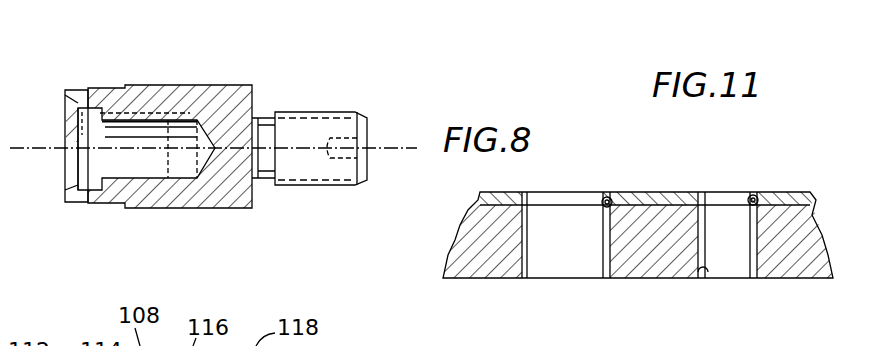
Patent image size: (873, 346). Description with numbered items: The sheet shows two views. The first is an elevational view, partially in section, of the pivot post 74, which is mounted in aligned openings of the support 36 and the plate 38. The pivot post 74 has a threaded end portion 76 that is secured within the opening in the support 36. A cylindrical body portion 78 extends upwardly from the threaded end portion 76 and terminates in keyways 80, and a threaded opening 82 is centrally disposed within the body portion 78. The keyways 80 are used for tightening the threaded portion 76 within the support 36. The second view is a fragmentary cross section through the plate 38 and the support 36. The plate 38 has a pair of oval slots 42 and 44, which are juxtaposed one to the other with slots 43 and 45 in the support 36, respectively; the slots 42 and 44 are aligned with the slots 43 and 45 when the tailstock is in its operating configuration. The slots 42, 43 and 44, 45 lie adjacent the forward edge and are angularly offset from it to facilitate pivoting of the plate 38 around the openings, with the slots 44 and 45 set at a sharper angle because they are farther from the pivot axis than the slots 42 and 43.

In FIG. 8, the pivot post 74 is at (160, 73).
In FIG. 8, the threaded end portion 76 is at (322, 128).
In FIG. 8, the cylindrical body portion 78 is at (233, 102).
In FIG. 8, the keyways 80 is at (70, 92).
In FIG. 8, the threaded opening 82 is at (186, 124).
In FIG. 11, the support 36 is at (792, 250).
In FIG. 11, the plate 38 is at (800, 192).
In FIG. 11, the oval slot 42 is at (607, 197).
In FIG. 11, the slot 43 is at (525, 260).
In FIG. 11, the oval slot 44 is at (753, 195).
In FIG. 11, the slot 45 is at (706, 280).